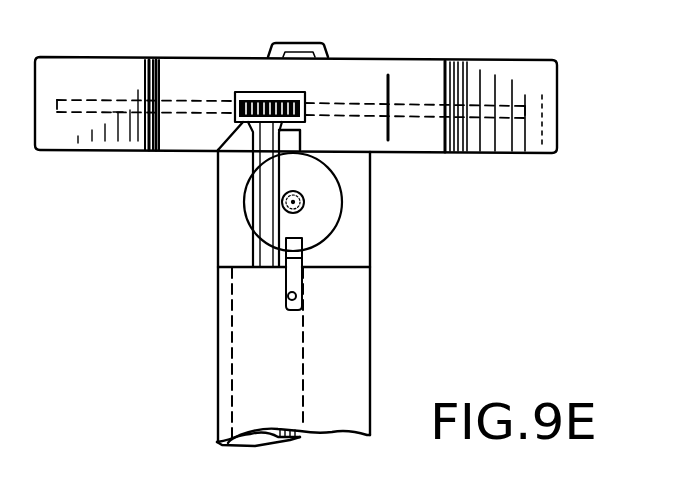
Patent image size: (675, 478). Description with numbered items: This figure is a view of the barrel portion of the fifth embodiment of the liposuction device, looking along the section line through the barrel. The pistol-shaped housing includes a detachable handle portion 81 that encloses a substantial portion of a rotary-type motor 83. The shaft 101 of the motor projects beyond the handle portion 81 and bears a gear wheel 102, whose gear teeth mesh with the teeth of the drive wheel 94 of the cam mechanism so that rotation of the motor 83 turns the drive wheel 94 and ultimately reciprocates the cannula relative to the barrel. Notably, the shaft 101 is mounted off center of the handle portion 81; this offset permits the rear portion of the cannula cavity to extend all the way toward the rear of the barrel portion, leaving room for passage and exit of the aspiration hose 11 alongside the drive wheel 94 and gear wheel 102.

The drive wheel 94 is at (394, 110).
The gear wheel 102 is at (219, 151).
The shaft 101 is at (266, 190).
The aspiration hose 11 is at (304, 202).
The rotary-type motor 83 is at (232, 322).
The detachable handle portion 81 is at (378, 319).